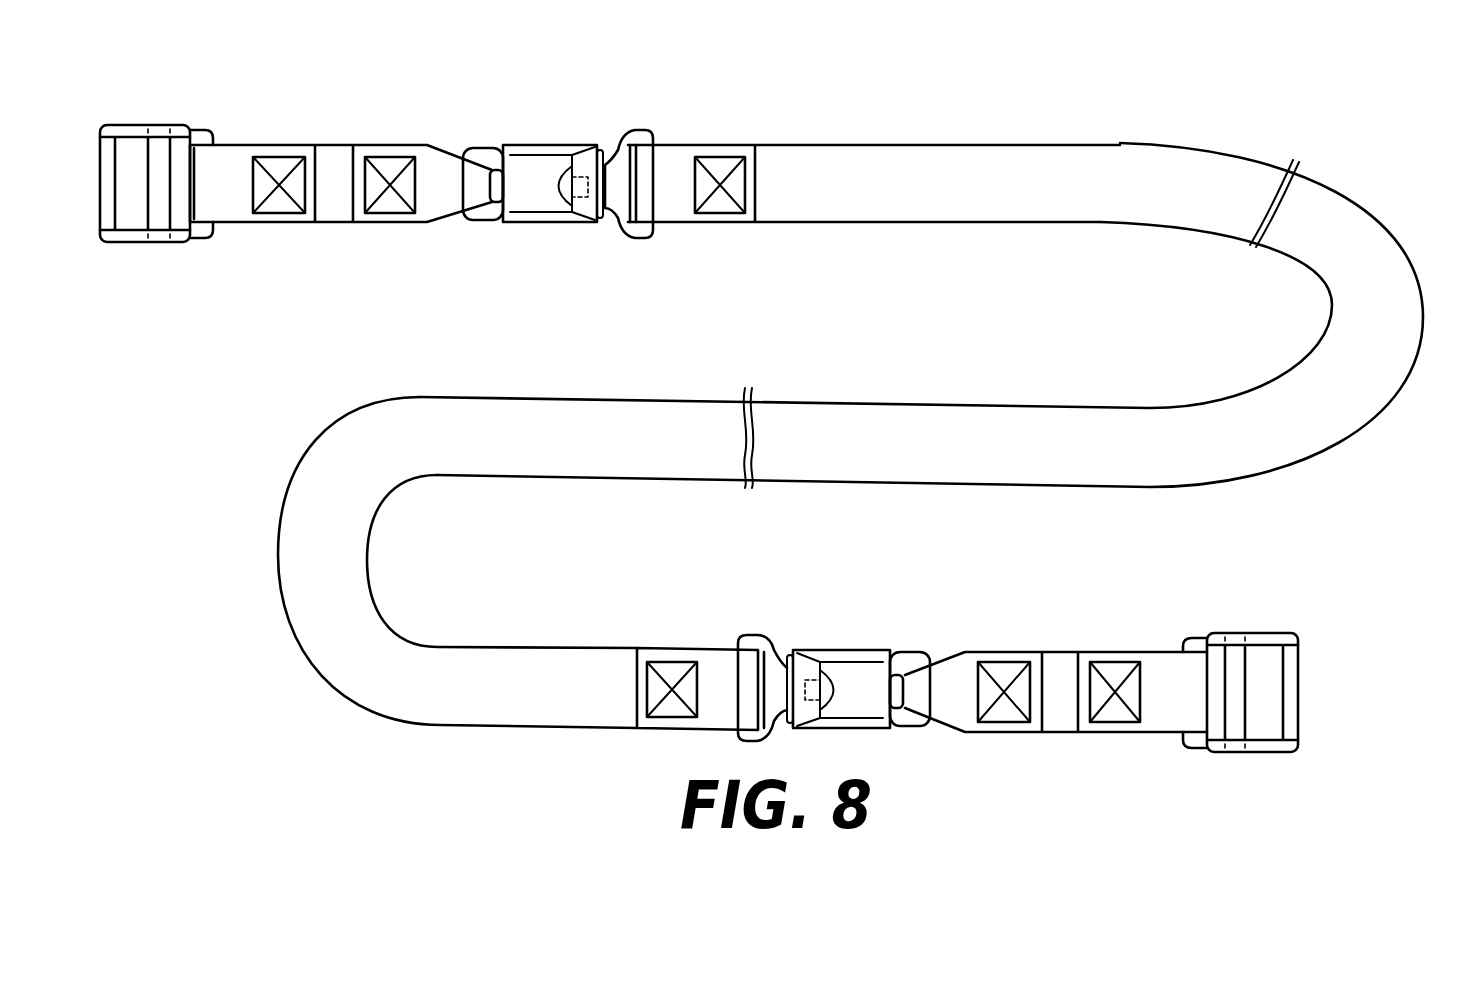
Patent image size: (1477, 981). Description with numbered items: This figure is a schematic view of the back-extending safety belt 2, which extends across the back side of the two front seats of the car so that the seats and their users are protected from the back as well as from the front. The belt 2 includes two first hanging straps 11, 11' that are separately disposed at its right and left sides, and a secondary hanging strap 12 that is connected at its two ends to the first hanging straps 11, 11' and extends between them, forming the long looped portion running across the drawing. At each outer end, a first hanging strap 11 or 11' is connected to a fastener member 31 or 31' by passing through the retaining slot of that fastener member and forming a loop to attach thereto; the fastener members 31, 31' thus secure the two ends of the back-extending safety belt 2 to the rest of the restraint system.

The back-extending safety belt 2 is at (918, 140).
The first hanging strap 11 is at (396, 131).
The first hanging strap 11' is at (922, 648).
The secondary hanging strap 12 is at (1338, 428).
The fastener member 31 is at (163, 141).
The fastener member 31' is at (1277, 638).